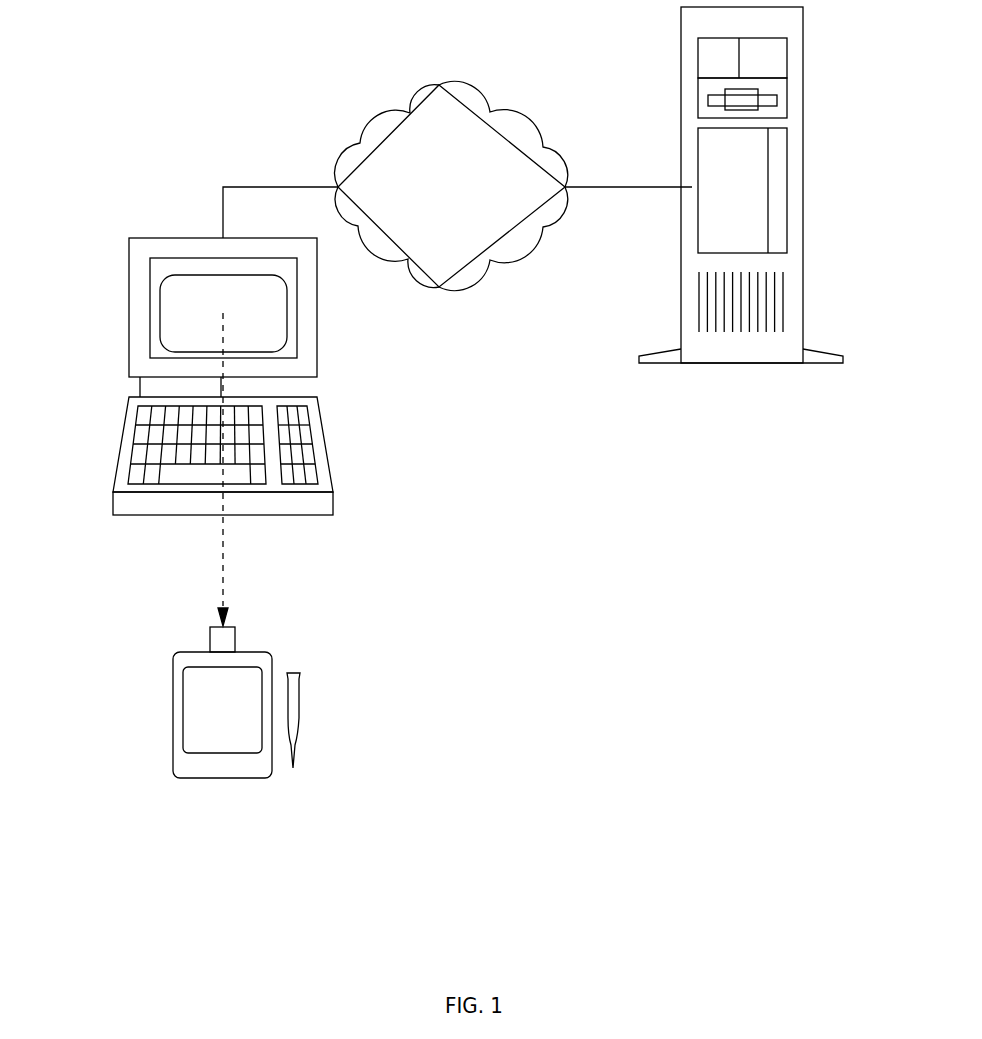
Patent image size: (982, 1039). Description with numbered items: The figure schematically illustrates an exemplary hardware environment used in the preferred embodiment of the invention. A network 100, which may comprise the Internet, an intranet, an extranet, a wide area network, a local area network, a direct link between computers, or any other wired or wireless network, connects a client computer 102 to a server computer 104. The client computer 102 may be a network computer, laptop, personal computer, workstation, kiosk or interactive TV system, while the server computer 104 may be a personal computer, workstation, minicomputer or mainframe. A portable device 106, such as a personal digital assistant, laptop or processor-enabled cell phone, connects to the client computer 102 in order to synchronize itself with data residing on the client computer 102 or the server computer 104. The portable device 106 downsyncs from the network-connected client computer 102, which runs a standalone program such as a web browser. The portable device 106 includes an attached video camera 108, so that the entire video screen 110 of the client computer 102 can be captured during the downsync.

The network 100 is at (490, 98).
The client computer 102 is at (135, 313).
The server computer 104 is at (805, 173).
The portable device 106 is at (173, 713).
The video camera 108 is at (235, 638).
The video screen 110 is at (287, 313).